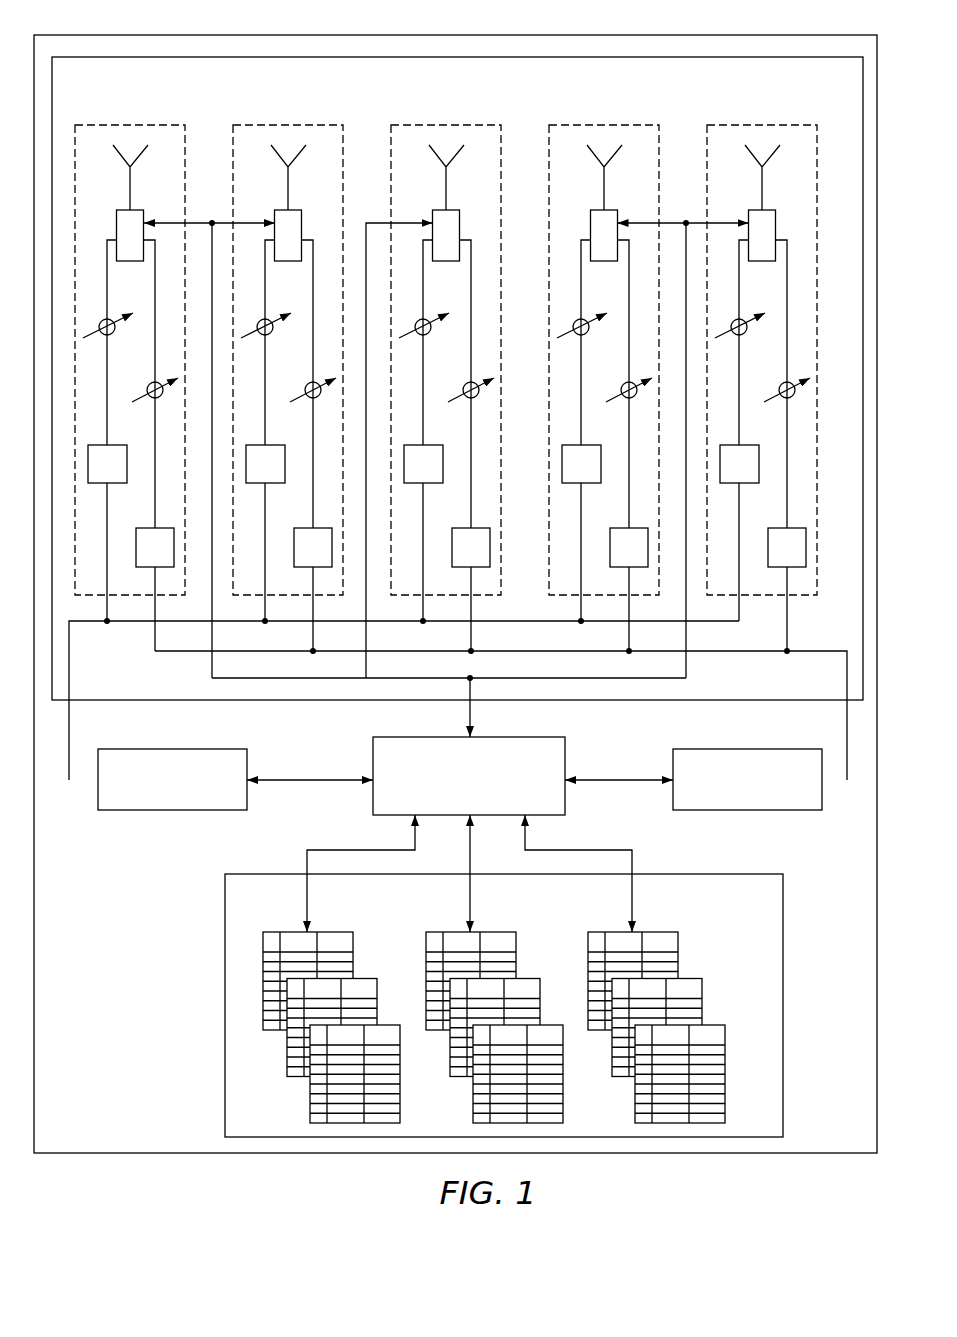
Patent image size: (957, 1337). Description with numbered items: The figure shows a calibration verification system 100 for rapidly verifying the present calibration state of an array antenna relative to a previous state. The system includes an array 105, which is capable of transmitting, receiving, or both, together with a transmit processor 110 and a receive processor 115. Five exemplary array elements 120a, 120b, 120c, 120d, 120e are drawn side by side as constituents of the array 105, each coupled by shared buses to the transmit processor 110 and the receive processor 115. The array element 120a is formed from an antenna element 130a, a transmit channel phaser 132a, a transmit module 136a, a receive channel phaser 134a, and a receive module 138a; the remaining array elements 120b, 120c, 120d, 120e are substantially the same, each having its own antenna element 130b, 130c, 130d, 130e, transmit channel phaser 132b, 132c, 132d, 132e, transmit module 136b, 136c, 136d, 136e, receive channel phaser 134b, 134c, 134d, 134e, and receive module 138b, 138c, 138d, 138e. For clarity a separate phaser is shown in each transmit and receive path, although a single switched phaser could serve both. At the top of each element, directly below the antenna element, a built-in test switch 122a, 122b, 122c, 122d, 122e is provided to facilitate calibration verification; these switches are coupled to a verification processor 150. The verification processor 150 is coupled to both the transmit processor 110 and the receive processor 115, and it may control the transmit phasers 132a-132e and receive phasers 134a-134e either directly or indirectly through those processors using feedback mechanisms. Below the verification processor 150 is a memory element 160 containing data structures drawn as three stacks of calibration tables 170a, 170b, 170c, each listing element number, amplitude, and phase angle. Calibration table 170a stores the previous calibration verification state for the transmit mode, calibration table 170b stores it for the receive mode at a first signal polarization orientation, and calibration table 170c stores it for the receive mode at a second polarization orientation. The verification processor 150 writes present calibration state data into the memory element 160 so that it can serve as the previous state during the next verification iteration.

The calibration verification system 100 is at (810, 1153).
The array 105 is at (307, 700).
The transmit processor 110 is at (118, 810).
The receive processor 115 is at (805, 810).
The array element 120a is at (162, 125).
The array element 120b is at (320, 125).
The array element 120c is at (478, 125).
The array element 120d is at (636, 125).
The array element 120e is at (794, 125).
The built-in test switch 122a is at (117, 222).
The built-in test switch 122b is at (275, 222).
The built-in test switch 122c is at (433, 222).
The built-in test switch 122d is at (591, 222).
The built-in test switch 122e is at (749, 222).
The antenna element 130a is at (131, 190).
The antenna element 130b is at (289, 190).
The antenna element 130c is at (447, 190).
The antenna element 130d is at (605, 190).
The antenna element 130e is at (763, 190).
The transmit channel phaser 132a is at (110, 319).
The transmit channel phaser 132b is at (268, 319).
The transmit channel phaser 132c is at (426, 319).
The transmit channel phaser 132d is at (584, 319).
The transmit channel phaser 132e is at (742, 319).
The receive channel phaser 134a is at (150, 382).
The receive channel phaser 134b is at (308, 382).
The receive channel phaser 134c is at (466, 382).
The receive channel phaser 134d is at (624, 382).
The receive channel phaser 134e is at (782, 382).
The transmit module 136a is at (127, 453).
The transmit module 136b is at (285, 453).
The transmit module 136c is at (443, 453).
The transmit module 136d is at (601, 453).
The transmit module 136e is at (759, 453).
The receive module 138a is at (136, 533).
The receive module 138b is at (294, 533).
The receive module 138c is at (452, 533).
The receive module 138d is at (610, 533).
The receive module 138e is at (768, 533).
The verification processor 150 is at (565, 803).
The memory element 160 is at (783, 1073).
The calibration table 170a is at (344, 932).
The calibration table 170b is at (507, 932).
The calibration table 170c is at (666, 932).